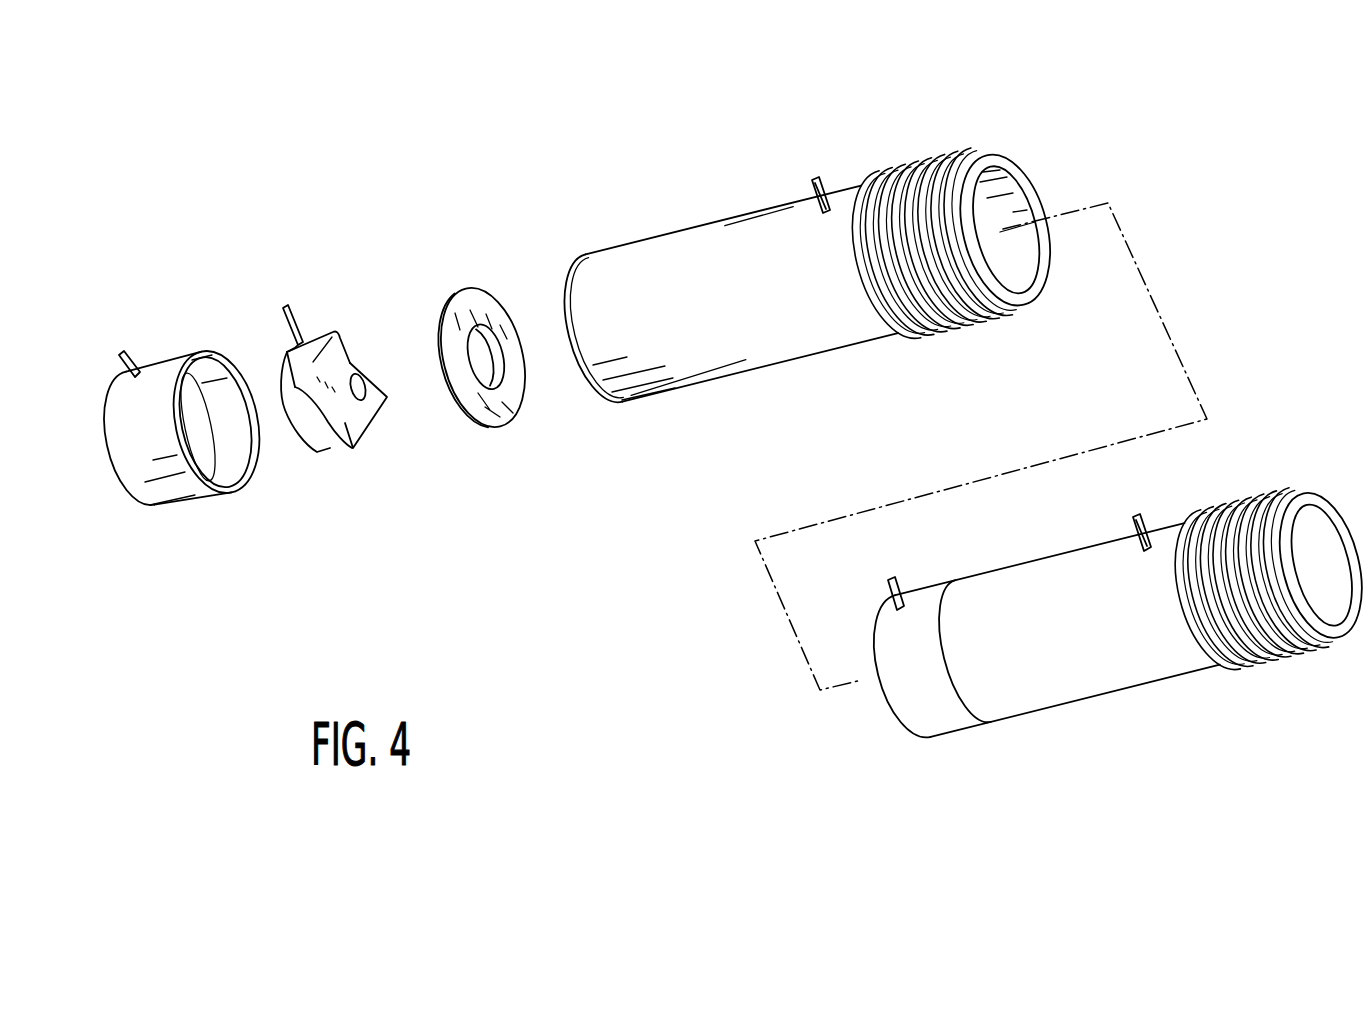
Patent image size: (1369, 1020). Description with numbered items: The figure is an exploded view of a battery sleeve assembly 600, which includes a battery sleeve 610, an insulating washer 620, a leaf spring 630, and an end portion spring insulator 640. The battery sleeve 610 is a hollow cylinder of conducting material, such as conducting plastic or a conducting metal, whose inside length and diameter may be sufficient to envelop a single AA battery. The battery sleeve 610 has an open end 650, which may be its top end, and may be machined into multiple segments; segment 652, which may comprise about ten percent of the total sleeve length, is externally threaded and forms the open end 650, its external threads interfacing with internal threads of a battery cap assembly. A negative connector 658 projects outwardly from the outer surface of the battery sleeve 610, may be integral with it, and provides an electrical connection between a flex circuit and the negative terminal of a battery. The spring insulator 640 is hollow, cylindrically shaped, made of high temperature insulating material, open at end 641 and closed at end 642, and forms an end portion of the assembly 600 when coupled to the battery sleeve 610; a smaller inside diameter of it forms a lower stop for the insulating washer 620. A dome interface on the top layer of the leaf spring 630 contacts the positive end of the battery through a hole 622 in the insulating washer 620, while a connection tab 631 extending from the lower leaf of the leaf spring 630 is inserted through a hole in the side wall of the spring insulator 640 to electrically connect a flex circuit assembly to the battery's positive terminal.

The battery sleeve assembly 600 is at (826, 280).
The battery sleeve 610 is at (827, 299).
The insulating washer 620 is at (466, 320).
The hole 622 is at (512, 414).
The leaf spring 630 is at (350, 422).
The connection tab 631 is at (290, 330).
The spring insulator 640 is at (167, 361).
The open end 641 is at (233, 468).
The closed end 642 is at (104, 413).
The open end 650 is at (1013, 203).
The segment 652 is at (963, 322).
The negative connector 658 is at (822, 186).